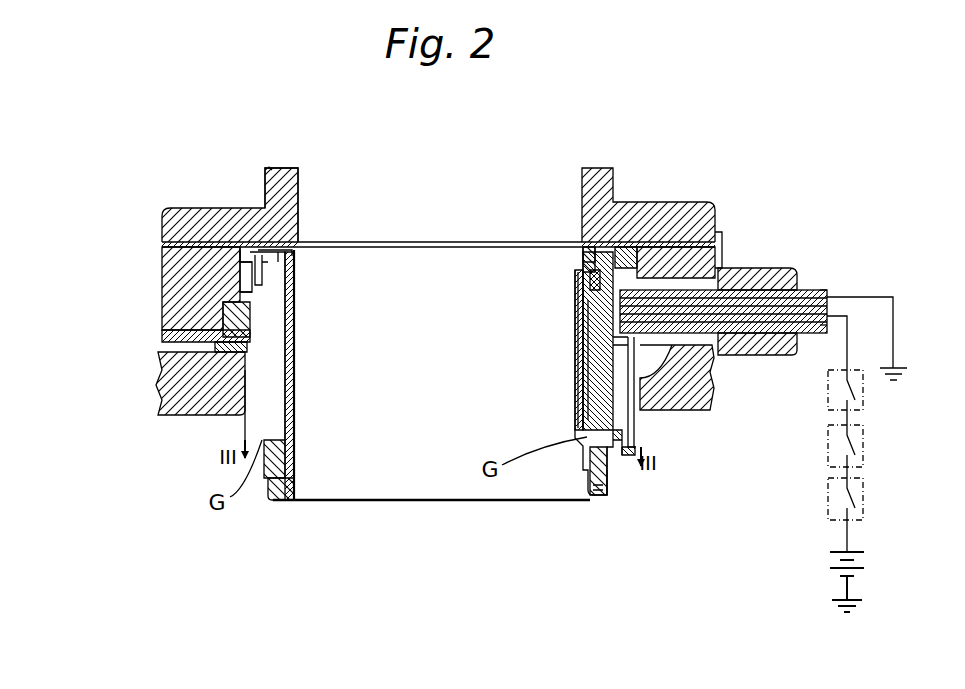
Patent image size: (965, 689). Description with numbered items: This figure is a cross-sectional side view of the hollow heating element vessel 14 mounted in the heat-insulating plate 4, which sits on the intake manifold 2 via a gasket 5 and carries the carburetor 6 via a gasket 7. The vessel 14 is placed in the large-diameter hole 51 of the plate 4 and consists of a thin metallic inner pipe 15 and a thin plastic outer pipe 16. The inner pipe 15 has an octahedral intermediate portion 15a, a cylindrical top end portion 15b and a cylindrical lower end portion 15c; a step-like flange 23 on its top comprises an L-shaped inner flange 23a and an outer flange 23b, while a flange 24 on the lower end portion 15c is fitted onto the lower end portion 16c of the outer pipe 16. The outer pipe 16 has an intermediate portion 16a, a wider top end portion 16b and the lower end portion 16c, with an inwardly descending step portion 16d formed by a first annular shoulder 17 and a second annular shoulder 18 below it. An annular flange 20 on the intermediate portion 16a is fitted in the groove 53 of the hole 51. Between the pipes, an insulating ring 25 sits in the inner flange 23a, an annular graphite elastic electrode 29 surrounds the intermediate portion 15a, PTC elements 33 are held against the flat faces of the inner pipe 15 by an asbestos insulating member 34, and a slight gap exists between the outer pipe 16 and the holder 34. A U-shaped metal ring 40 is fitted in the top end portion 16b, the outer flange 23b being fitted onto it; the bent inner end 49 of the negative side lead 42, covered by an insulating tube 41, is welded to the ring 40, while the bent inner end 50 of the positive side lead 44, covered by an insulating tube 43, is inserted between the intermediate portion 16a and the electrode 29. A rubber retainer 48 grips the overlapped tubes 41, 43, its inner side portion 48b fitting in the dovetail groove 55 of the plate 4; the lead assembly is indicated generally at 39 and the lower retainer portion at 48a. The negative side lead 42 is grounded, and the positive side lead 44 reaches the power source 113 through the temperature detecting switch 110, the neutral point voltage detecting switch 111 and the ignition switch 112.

The intake manifold 2 is at (162, 390).
The heat-insulating plate 4 is at (163, 278).
The gasket 5 is at (235, 327).
The carburetor 6 is at (640, 212).
The gasket 7 is at (162, 245).
The hollow heating element vessel 14 is at (270, 506).
The inner pipe 15 is at (578, 422).
The intermediate portion 15a is at (578, 330).
The cylindrical top end portion 15b is at (585, 262).
The cylindrical lower end portion 15c is at (590, 478).
The outer pipe 16 is at (620, 455).
The intermediate portion 16a is at (627, 427).
The top end portion 16b is at (237, 283).
The lower end portion 16c is at (598, 492).
The inwardly descending step portion 16d is at (632, 455).
The first annular shoulder 17 is at (637, 435).
The second annular shoulder 18 is at (625, 460).
The annular flange 20 is at (215, 348).
The step-like flange 23 is at (257, 257).
The inner flange 23a is at (267, 250).
The outer flange 23b is at (240, 250).
The flange 24 is at (610, 494).
The insulating ring 25 is at (277, 272).
The elastic electrode 29 is at (268, 402).
The PTC element 33 is at (583, 350).
The insulating member 34 is at (288, 345).
The electromagnetic coil assembly 39 is at (743, 255).
The metal ring 40 is at (282, 257).
The insulating tube 41 is at (820, 292).
The negative side lead 42 is at (800, 293).
The insulating tube 43 is at (818, 330).
The positive side lead 44 is at (805, 330).
The retainer 48 is at (763, 270).
The bobbin lower flange 48a is at (750, 343).
The inner side portion 48b is at (720, 232).
The inner end 49 is at (578, 312).
The inner end 50 is at (583, 372).
The large-diameter hole 51 is at (675, 272).
The groove 53 is at (230, 317).
The dovetail groove 55 is at (632, 255).
The temperature detecting switch 110 is at (866, 400).
The neutral point voltage detecting switch 111 is at (866, 444).
The ignition switch 112 is at (866, 497).
The power source 113 is at (866, 567).